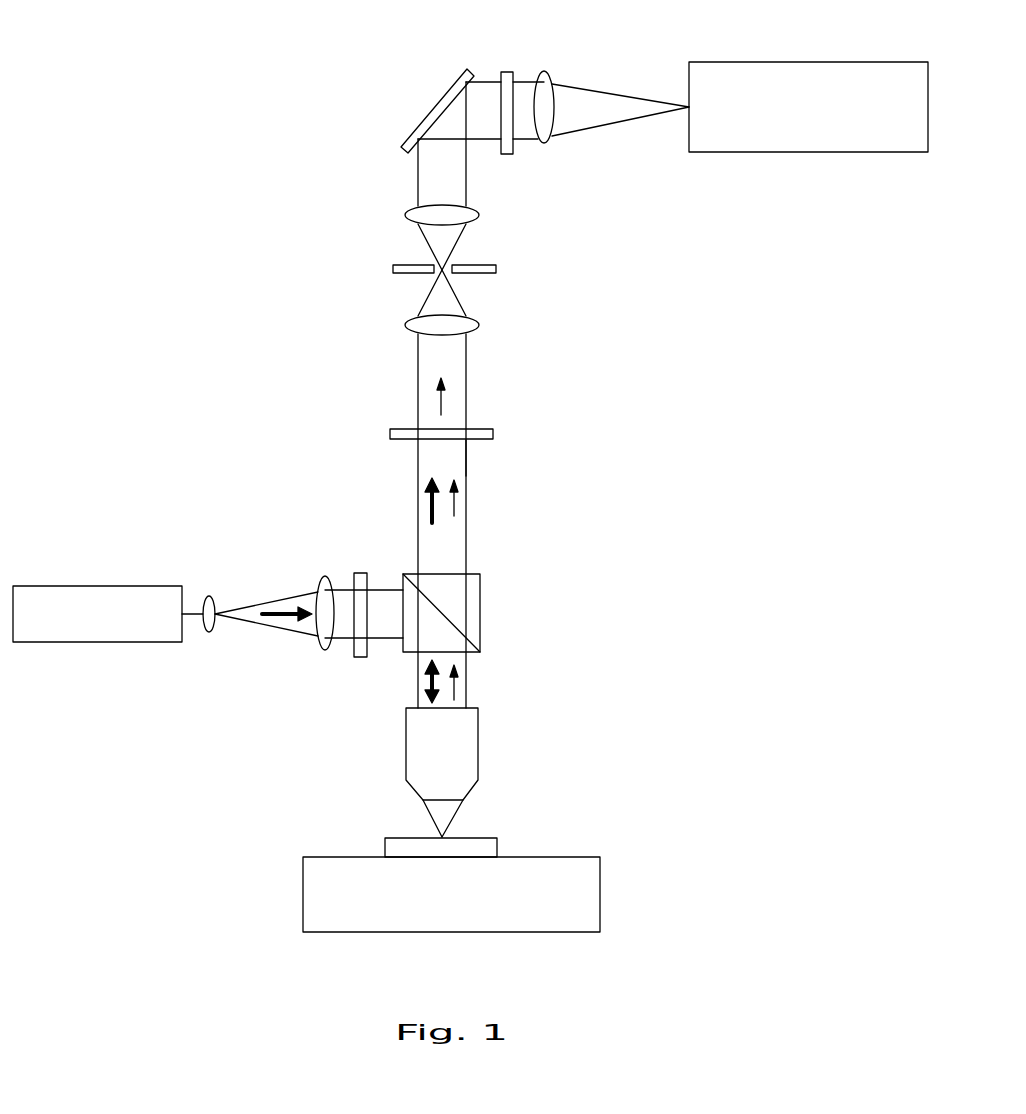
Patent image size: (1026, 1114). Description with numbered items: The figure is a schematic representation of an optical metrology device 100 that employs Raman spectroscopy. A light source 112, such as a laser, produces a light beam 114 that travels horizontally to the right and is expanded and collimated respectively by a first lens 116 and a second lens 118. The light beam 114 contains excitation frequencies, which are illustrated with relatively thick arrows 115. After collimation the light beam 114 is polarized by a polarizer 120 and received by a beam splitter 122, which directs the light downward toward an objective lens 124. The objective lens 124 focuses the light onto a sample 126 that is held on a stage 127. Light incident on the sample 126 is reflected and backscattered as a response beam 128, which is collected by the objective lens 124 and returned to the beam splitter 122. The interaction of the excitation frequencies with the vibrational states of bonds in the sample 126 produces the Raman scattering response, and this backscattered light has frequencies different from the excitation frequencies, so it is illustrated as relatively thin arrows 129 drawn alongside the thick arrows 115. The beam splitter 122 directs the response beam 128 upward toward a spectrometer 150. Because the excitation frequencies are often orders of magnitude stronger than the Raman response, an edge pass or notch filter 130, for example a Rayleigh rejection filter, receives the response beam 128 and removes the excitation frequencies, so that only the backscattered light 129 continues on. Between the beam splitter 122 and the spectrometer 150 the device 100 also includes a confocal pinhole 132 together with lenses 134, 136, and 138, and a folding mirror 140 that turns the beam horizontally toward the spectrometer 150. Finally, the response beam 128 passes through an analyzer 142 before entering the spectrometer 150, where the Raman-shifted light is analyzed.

The optical metrology device 100 is at (118, 30).
The light source 112 is at (97, 586).
The light beam 114 is at (247, 604).
The thick arrows 115 is at (280, 621).
The lens 116 is at (209, 633).
The lens 118 is at (325, 650).
The polarizer 120 is at (358, 573).
The beam splitter 122 is at (480, 610).
The objective lens 124 is at (478, 755).
The sample 126 is at (497, 847).
The stage 127 is at (600, 890).
The response beam 128 is at (466, 458).
The thin arrows 129 is at (441, 403).
The edge pass filter 130 is at (390, 434).
The confocal pinhole 132 is at (393, 268).
The lens 134 is at (410, 325).
The lens 136 is at (410, 210).
The lens 138 is at (544, 72).
The folding mirror 140 is at (405, 130).
The analyzer 142 is at (507, 154).
The spectrometer 150 is at (737, 62).